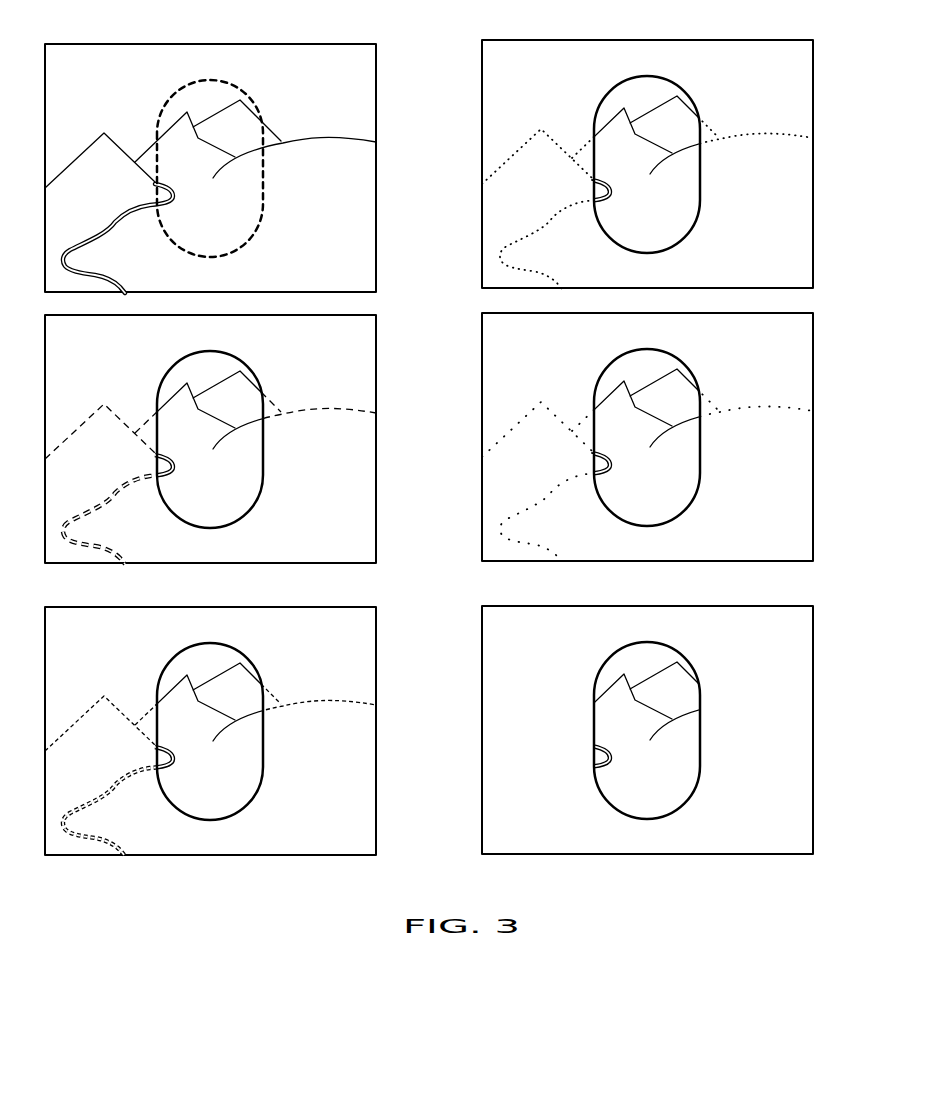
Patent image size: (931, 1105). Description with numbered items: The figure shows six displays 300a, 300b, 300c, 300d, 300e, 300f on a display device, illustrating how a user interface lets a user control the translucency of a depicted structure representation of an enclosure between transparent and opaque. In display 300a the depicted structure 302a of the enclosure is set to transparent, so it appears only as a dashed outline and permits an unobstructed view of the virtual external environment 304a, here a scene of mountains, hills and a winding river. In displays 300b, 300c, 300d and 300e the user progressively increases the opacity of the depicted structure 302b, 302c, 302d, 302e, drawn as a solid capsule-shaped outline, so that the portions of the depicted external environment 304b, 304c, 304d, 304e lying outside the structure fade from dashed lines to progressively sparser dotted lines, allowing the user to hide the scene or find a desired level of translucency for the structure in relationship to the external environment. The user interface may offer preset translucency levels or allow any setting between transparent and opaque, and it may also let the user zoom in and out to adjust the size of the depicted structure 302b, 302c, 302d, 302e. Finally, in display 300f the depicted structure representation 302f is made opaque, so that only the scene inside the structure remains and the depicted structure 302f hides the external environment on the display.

The display 300a is at (140, 0).
The depicted structure 302a is at (157, 36).
The virtual external environment 304a is at (235, 89).
The display 300b is at (244, 436).
The depicted structure 302b is at (215, 421).
The depicted external environment 304b is at (513, 540).
The display 300c is at (244, 729).
The depicted structure 302c is at (215, 713).
The depicted external environment 304c is at (294, 686).
The display 300d is at (680, 161).
The depicted structure 302d is at (652, 146).
The depicted external environment 304d is at (731, 119).
The display 300e is at (680, 435).
The depicted structure 302e is at (652, 419).
The depicted external environment 304e is at (731, 392).
The display 300f is at (681, 728).
The depicted structure representation 302f is at (678, 730).